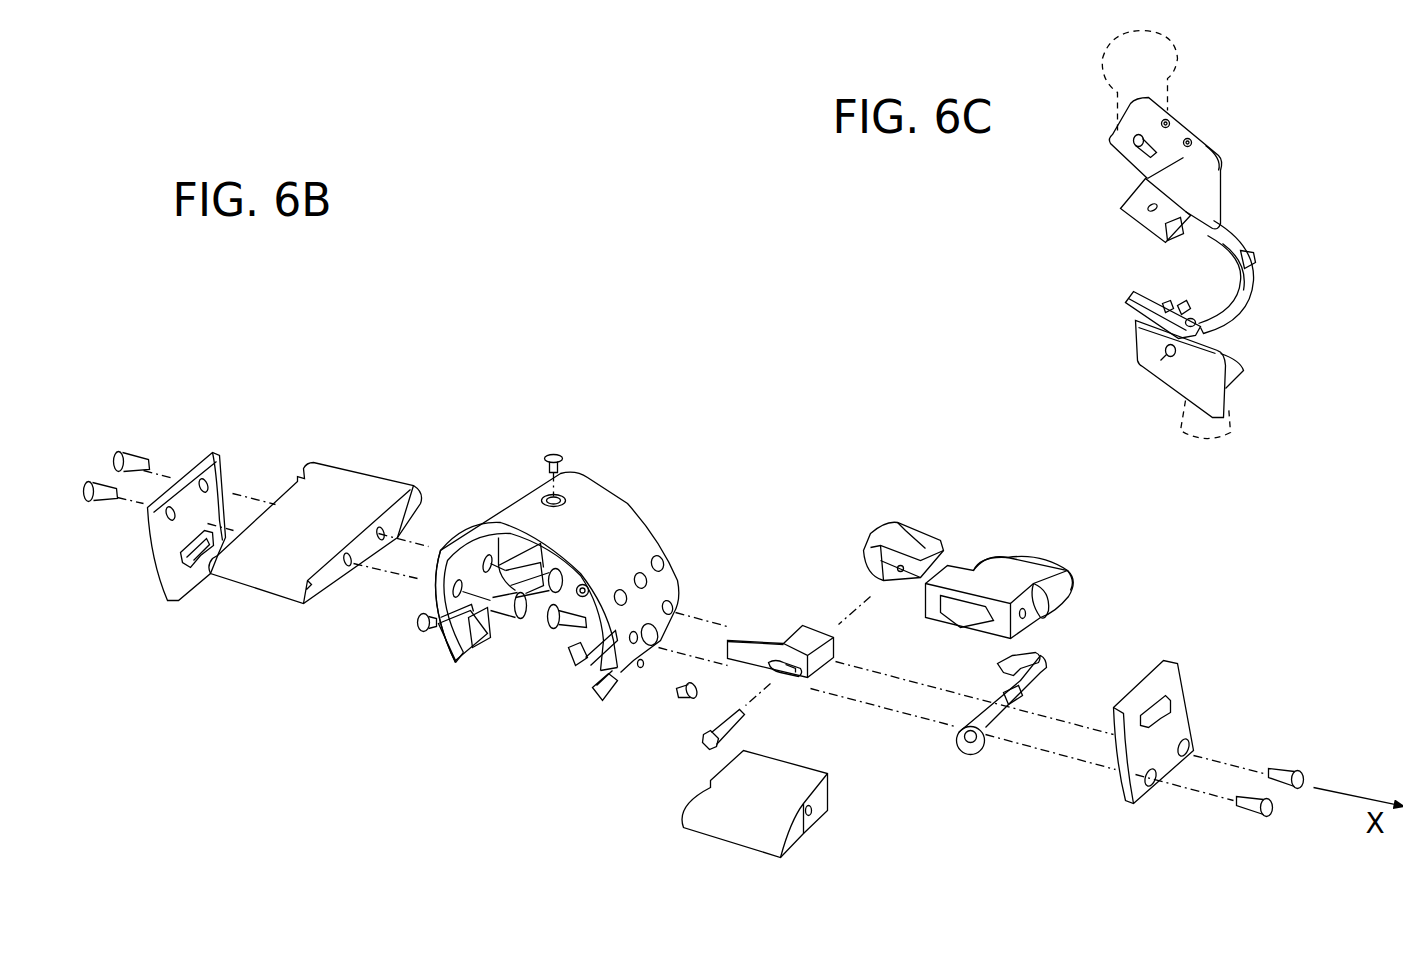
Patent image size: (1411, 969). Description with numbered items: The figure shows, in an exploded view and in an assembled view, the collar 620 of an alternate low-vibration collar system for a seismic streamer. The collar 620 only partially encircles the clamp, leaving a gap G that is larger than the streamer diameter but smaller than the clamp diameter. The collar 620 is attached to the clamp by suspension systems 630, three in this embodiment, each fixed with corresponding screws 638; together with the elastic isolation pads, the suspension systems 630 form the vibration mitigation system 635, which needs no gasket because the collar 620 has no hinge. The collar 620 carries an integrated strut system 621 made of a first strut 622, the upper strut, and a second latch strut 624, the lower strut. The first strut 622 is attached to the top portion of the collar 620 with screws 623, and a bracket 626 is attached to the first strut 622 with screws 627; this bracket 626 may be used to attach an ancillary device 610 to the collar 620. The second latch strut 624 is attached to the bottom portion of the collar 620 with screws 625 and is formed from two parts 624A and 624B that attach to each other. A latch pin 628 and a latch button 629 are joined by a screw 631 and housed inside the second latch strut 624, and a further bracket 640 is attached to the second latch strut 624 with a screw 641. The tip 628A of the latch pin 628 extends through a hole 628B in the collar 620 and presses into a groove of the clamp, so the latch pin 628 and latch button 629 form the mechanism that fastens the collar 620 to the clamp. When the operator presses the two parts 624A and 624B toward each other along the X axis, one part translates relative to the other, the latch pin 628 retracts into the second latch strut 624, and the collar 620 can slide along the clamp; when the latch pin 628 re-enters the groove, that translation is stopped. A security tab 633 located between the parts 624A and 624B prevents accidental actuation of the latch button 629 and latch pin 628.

In FIG. 6C, the ancillary device 610 is at (1100, 70).
In FIG. 6B, the collar 620 is at (620, 497).
In FIG. 6C, the collar 620 is at (1237, 305).
In FIG. 6B, the integrated strut system 621 is at (342, 257).
In FIG. 6B, the first strut 622 is at (375, 458).
In FIG. 6C, the first strut 622 is at (1218, 148).
In FIG. 6B, the screws 623 is at (546, 612).
In FIG. 6B, the second latch strut 624 is at (1052, 546).
In FIG. 6B, the part of second latch strut 624A is at (1013, 563).
In FIG. 6B, the part of second latch strut 624B is at (714, 857).
In FIG. 6B, the screws 625 is at (547, 628).
In FIG. 6B, the bracket 626 is at (215, 465).
In FIG. 6B, the screws 627 is at (127, 458).
In FIG. 6B, the latch pin 628 is at (820, 686).
In FIG. 6B, the tip 628A is at (728, 640).
In FIG. 6B, the hole 628B is at (655, 630).
In FIG. 6B, the latch button 629 is at (923, 527).
In FIG. 6B, the suspension system 630 is at (488, 622).
In FIG. 6C, the suspension system 630 is at (1253, 258).
In FIG. 6B, the screw 631 is at (700, 751).
In FIG. 6B, the security tab 633 is at (1056, 640).
In FIG. 6B, the vibration mitigation system 635 is at (272, 695).
In FIG. 6B, the screws 638 is at (561, 451).
In FIG. 6B, the bracket 640 is at (1173, 720).
In FIG. 6B, the screw 641 is at (1270, 767).
In FIG. 6C, the gap G is at (1120, 232).